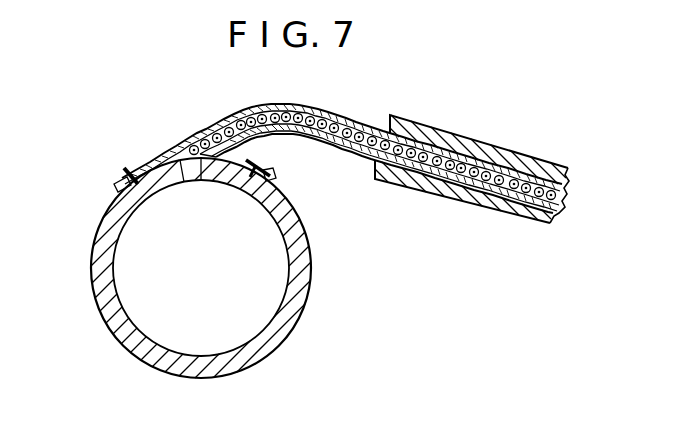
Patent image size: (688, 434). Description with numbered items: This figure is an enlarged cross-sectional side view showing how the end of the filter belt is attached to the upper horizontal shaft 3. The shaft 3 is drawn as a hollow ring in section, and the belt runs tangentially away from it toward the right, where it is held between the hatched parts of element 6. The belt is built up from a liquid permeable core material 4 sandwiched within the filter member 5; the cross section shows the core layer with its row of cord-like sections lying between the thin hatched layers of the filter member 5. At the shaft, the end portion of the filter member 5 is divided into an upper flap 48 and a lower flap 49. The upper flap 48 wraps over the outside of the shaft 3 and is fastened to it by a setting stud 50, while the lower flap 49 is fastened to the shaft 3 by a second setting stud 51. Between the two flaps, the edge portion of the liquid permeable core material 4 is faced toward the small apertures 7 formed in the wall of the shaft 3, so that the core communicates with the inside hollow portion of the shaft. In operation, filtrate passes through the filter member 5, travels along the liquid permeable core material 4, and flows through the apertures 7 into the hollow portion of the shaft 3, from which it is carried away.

The upper horizontal shaft 3 is at (302, 283).
The liquid permeable core material 4 is at (214, 124).
The filter member 5 is at (309, 108).
The clamping blocks 6 is at (474, 140).
The small apertures 7 is at (190, 181).
The upper flap 48 is at (152, 162).
The lower flap 49 is at (244, 150).
The setting stud 50 is at (128, 170).
The setting stud 51 is at (266, 170).